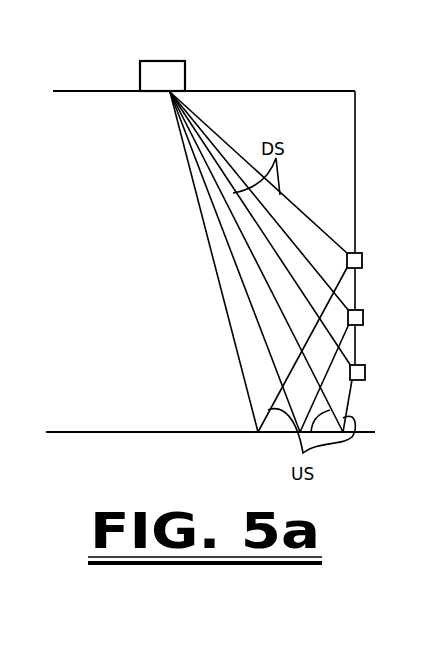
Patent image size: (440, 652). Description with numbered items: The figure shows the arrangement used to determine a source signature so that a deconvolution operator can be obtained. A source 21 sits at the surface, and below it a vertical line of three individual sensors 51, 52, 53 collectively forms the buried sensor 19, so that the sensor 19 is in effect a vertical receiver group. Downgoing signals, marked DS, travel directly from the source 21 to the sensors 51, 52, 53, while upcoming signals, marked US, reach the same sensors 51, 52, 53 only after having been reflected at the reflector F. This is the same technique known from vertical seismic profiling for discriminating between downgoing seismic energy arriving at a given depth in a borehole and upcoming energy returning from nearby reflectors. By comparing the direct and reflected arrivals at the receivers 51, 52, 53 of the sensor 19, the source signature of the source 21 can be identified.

The source 21 is at (186, 72).
The sensor 19 is at (381, 253).
The individual sensor 51 is at (360, 252).
The individual sensor 52 is at (363, 268).
The individual sensor 53 is at (375, 390).